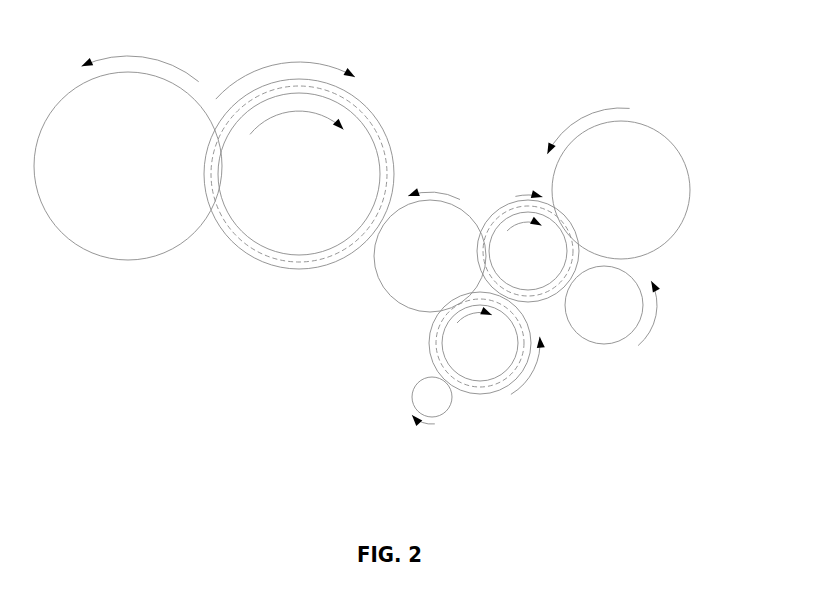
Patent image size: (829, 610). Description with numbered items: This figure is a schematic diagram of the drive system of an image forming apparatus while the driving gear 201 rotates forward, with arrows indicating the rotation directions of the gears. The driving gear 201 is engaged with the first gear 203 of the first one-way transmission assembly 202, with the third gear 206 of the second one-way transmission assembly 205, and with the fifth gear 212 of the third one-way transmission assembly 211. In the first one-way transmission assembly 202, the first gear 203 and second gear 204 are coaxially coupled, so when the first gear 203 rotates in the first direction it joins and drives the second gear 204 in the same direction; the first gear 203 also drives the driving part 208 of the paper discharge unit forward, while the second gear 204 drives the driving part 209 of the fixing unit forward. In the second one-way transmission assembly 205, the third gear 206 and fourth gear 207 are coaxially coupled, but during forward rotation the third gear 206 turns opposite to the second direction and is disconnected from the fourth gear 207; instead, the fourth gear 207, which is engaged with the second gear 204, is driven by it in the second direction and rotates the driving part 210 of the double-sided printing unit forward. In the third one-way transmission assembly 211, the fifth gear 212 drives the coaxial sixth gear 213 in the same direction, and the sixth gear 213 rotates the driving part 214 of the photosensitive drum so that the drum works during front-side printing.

The driving gear 201 is at (392, 300).
The first one-way transmission assembly 202 is at (508, 214).
The first gear 203 is at (503, 232).
The second gear 204 is at (520, 205).
The second one-way transmission assembly 205 is at (468, 383).
The third gear 206 is at (485, 375).
The fourth gear 207 is at (457, 383).
The driving part of the paper discharge unit 208 is at (675, 235).
The driving part of the fixing unit 209 is at (590, 340).
The driving part of the double-sided printing unit 210 is at (410, 392).
The third one-way transmission assembly 211 is at (280, 258).
The fifth gear 212 is at (220, 230).
The sixth gear 213 is at (267, 238).
The driving part of the photosensitive drum 214 is at (113, 257).